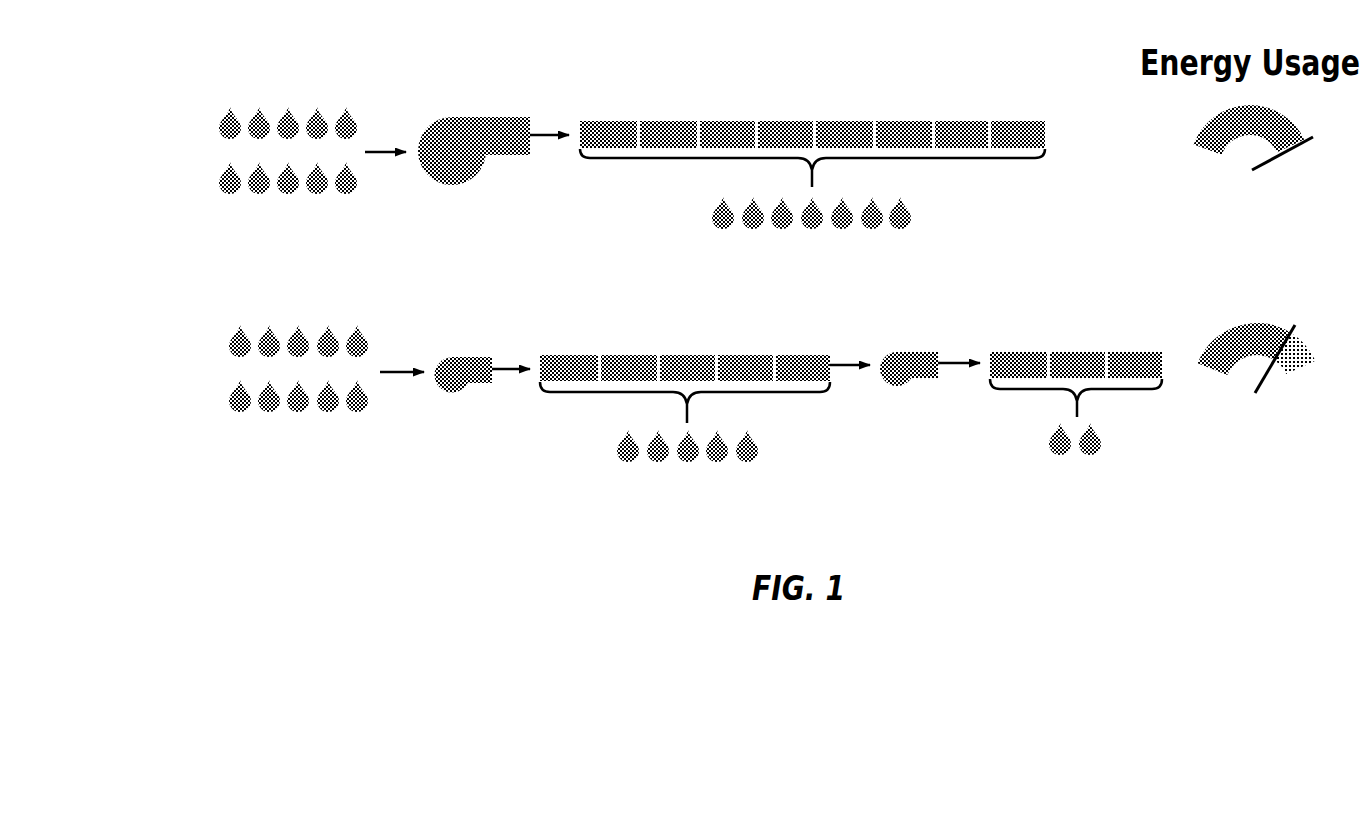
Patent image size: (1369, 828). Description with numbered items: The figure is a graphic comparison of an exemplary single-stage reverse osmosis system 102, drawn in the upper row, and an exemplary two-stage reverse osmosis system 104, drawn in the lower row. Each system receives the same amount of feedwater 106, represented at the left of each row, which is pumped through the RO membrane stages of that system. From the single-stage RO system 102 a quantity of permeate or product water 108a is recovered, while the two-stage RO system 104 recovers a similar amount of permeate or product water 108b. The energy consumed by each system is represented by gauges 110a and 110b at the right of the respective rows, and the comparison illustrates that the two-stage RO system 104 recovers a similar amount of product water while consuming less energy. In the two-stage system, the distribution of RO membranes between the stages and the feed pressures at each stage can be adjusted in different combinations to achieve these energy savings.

The single-stage RO system 102 is at (174, 70).
The two-stage RO system 104 is at (174, 288).
The feedwater 106 is at (196, 151).
The permeate or product water 108a is at (948, 221).
The permeate or product water 108b is at (980, 468).
The gauge 110a is at (1291, 189).
The gauge 110b is at (1291, 398).